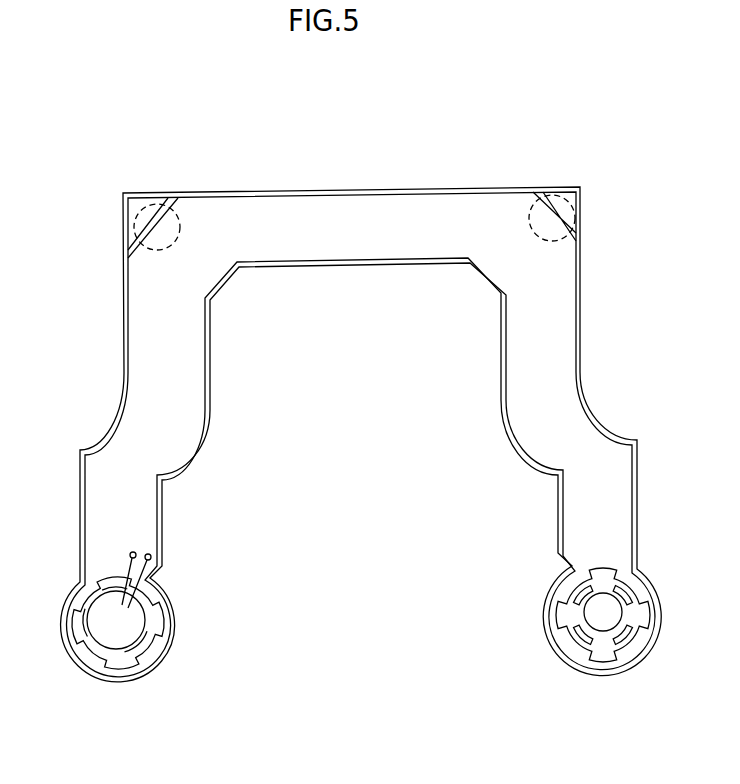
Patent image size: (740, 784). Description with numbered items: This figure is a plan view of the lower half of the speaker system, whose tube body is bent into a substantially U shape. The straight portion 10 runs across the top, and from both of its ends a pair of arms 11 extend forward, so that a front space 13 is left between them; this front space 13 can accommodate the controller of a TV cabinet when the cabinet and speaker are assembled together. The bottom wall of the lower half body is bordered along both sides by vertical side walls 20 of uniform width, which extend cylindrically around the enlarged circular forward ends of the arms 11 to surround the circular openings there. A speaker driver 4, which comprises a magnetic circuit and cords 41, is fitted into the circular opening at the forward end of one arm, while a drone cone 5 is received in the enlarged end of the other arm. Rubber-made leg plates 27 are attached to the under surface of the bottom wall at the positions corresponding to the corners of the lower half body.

The straight portion 10 is at (326, 192).
The leg plates 27 is at (185, 218).
The arms 11 is at (190, 362).
The side walls 20 is at (558, 519).
The front space 13 is at (358, 562).
The speaker driver 4 is at (107, 630).
The cords 41 is at (131, 550).
The drone cone 5 is at (600, 615).